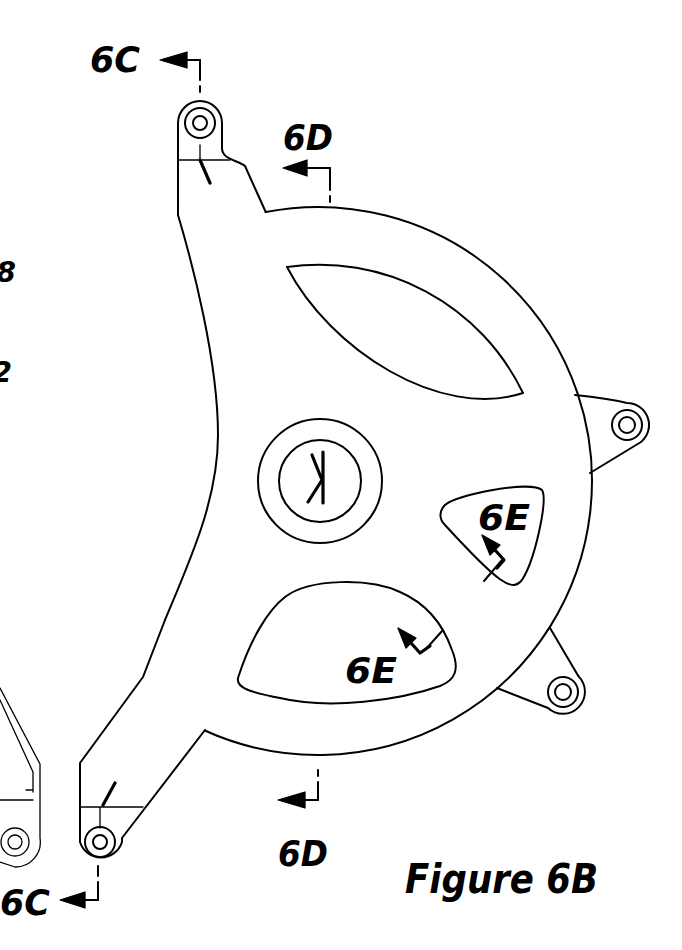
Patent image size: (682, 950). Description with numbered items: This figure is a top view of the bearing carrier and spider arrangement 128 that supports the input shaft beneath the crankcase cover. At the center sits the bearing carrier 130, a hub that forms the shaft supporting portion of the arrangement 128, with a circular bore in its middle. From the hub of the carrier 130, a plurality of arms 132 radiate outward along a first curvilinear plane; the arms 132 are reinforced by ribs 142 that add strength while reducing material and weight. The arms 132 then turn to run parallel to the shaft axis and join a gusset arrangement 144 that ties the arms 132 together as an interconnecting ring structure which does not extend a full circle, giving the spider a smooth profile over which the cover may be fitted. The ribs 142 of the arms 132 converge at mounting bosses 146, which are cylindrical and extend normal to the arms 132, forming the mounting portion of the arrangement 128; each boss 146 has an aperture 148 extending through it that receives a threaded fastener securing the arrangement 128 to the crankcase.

The bearing carrier and spider arrangement 128 is at (555, 290).
The bearing carrier 130 is at (340, 457).
The arms 132 is at (208, 292).
The ribs 142 is at (410, 216).
The gusset arrangement 144 is at (482, 285).
The mounting bosses 146 is at (225, 133).
The mounting hole 148 is at (207, 117).